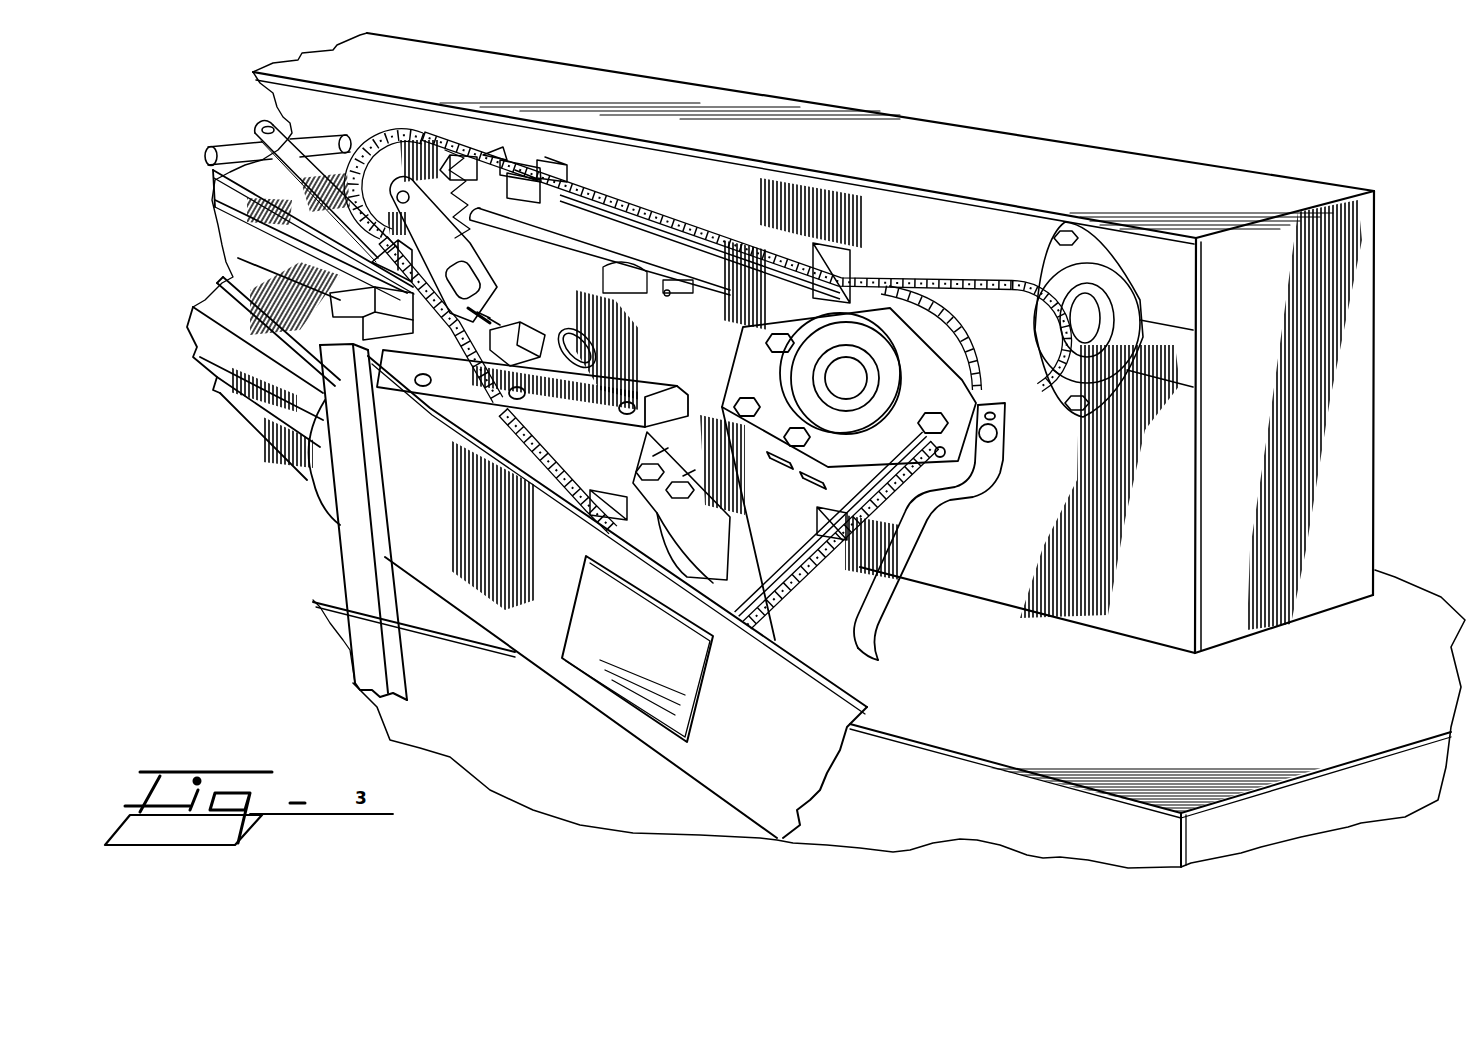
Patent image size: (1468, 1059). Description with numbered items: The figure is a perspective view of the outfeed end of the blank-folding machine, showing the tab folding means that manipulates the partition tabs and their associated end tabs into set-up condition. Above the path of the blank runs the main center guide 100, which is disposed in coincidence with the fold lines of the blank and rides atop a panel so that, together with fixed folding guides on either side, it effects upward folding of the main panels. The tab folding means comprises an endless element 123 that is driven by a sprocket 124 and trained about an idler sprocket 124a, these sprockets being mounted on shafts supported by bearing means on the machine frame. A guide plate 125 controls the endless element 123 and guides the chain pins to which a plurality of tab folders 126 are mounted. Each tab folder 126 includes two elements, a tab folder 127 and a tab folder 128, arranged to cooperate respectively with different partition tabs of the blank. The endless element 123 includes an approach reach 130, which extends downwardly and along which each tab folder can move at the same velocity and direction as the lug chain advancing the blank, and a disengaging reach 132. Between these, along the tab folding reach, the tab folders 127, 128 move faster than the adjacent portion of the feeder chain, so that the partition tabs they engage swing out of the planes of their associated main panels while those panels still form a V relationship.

The main center guide 100 is at (228, 300).
The endless element 123 is at (710, 230).
The sprocket 124 is at (398, 163).
The idler sprocket 124a is at (887, 272).
The guide plate 125 is at (540, 282).
The tab folders 126 is at (547, 163).
The tab folder element 127 is at (520, 197).
The tab folder element 128 is at (500, 147).
The approach reach 130 is at (508, 412).
The disengaging reach 132 is at (887, 500).